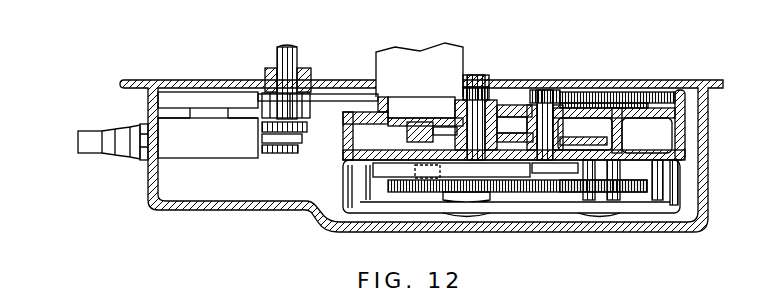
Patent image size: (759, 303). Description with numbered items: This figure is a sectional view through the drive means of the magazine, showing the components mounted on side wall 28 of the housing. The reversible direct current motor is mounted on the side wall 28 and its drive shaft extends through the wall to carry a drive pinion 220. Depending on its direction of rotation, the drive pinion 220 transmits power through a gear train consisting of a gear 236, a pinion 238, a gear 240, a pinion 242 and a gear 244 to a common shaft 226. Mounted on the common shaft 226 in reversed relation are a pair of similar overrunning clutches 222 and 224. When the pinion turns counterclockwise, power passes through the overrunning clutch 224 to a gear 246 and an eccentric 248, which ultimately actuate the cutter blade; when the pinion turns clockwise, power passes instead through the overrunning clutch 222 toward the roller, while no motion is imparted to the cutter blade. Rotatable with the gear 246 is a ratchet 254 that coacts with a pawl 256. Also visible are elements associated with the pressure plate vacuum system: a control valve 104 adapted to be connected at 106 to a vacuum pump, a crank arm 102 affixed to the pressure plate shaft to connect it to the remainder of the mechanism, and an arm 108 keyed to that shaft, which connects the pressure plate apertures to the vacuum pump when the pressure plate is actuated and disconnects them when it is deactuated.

The side wall 28 is at (682, 80).
The crank arm 102 is at (347, 98).
The control valve 104 is at (188, 150).
The connection to vacuum pump 106 is at (94, 146).
The arm 108 is at (302, 146).
The drive pinion 220 is at (407, 133).
The overrunning clutch 222 is at (630, 107).
The overrunning clutch 224 is at (636, 192).
The common shaft 226 is at (605, 168).
The gear 236 is at (512, 128).
The pinion 238 is at (468, 137).
The gear 240 is at (566, 140).
The pinion 242 is at (543, 95).
The gear 244 is at (620, 97).
The gear 246 is at (508, 190).
The eccentric 248 is at (422, 172).
The ratchet 254 is at (467, 98).
The pawl 256 is at (547, 98).